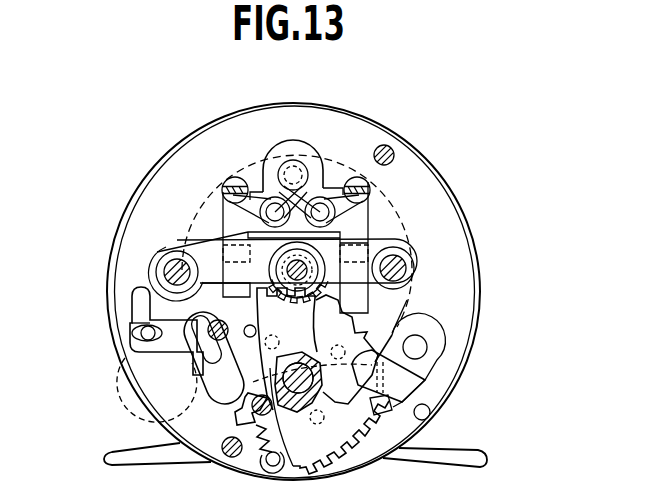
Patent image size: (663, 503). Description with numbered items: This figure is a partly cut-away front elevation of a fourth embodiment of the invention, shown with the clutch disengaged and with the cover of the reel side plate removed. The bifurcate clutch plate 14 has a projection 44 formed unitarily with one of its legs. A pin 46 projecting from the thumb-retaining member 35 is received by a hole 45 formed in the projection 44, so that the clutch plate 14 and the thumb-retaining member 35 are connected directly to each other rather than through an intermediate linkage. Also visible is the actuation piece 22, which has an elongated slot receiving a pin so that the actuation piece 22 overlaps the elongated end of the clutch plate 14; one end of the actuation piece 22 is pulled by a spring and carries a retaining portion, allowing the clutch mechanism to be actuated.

The clutch plate 14 is at (305, 152).
The thumb-retaining member 35 is at (283, 247).
The projection 44 is at (181, 343).
The hole 45 is at (134, 330).
The pin 46 is at (132, 347).
The actuation piece 22 is at (240, 403).